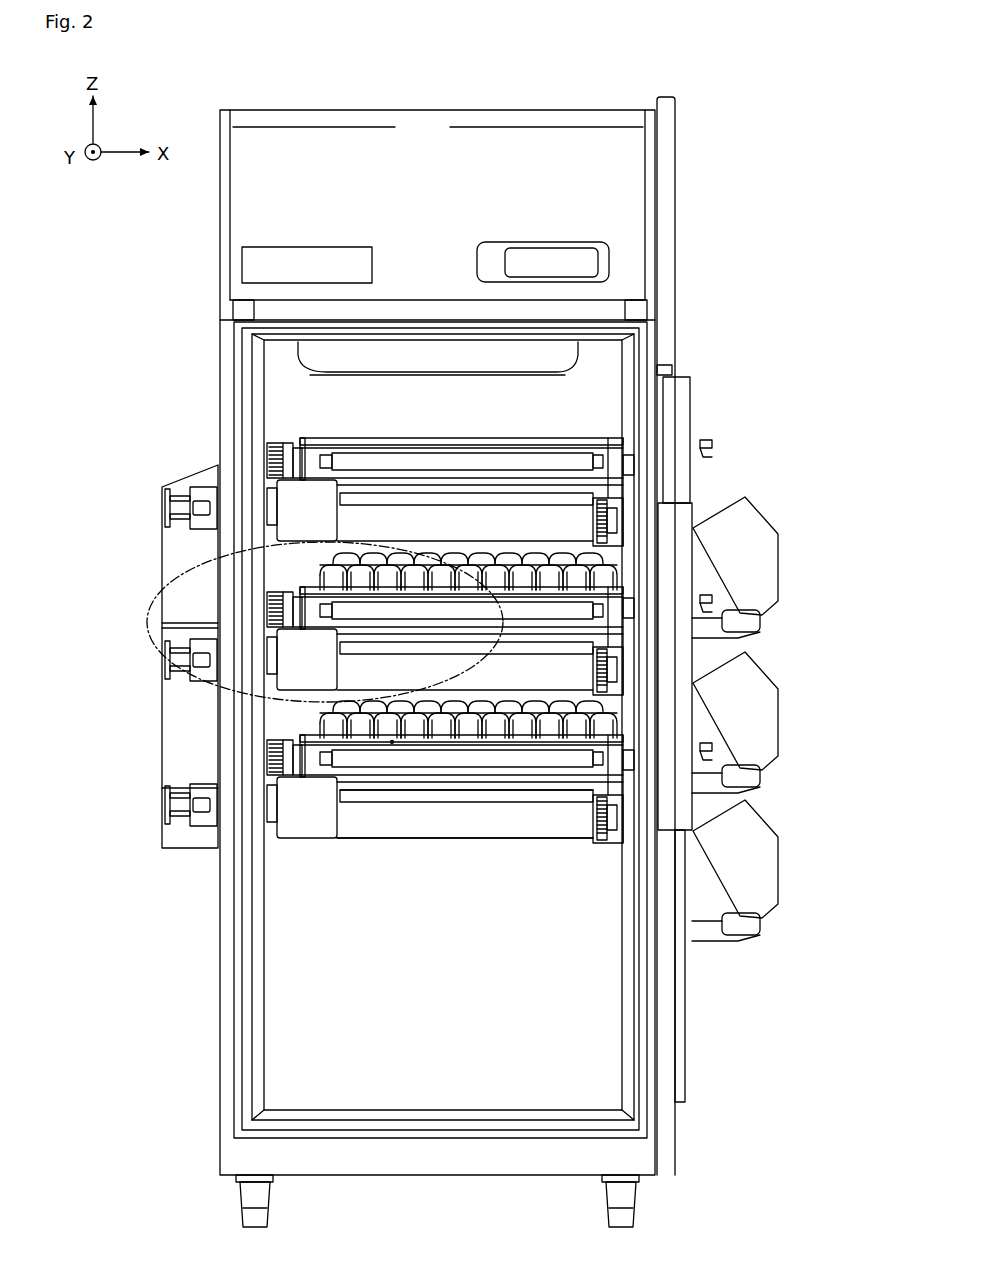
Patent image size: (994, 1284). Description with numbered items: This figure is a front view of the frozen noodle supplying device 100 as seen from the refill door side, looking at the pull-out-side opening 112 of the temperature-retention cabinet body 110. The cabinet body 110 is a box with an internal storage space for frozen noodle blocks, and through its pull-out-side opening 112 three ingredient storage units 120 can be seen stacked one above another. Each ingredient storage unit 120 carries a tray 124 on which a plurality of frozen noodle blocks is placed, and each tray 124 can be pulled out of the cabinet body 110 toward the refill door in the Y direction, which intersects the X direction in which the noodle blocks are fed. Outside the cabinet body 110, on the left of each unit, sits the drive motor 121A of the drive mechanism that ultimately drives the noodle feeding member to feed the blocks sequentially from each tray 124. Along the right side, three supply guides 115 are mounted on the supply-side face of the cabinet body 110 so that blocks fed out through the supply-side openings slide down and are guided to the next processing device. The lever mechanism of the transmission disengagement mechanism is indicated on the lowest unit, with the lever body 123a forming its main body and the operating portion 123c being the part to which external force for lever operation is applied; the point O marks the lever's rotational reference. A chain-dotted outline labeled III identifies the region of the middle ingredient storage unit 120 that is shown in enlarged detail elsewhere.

The frozen noodle supplying device 100 is at (438, 82).
The temperature-retention cabinet body 110 is at (578, 100).
The pull-out-side opening 112 is at (297, 932).
The supply guide 115 is at (772, 526).
The ingredient storage unit 120 is at (288, 430).
The drive motor 121A is at (185, 486).
The lever body 123a is at (445, 840).
The operating portion 123c is at (510, 780).
The tray 124 is at (632, 465).
The detail region of FIG. 3 III is at (148, 619).
The rotation center O is at (392, 744).